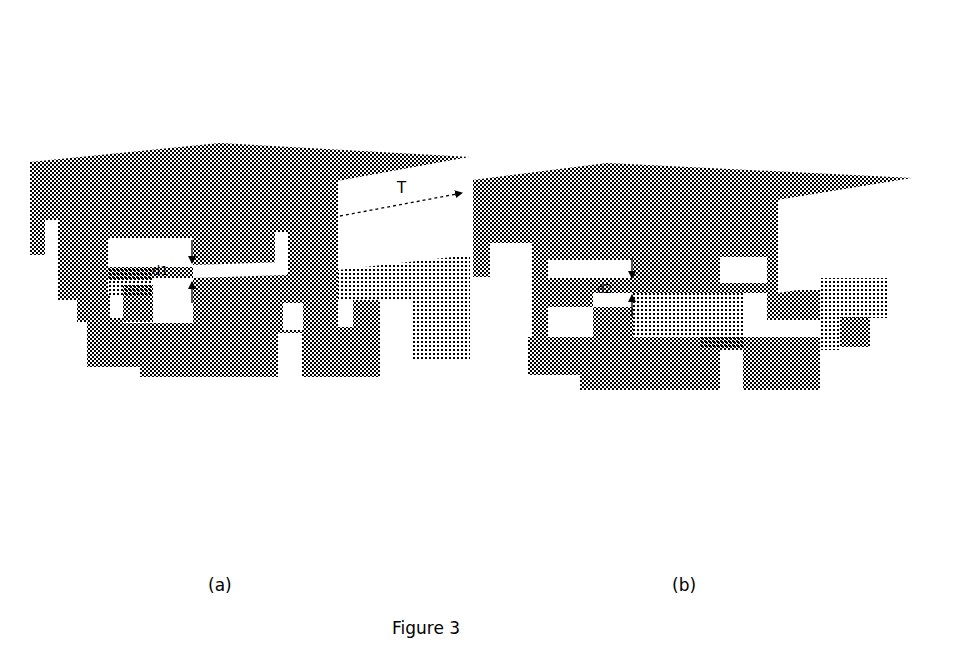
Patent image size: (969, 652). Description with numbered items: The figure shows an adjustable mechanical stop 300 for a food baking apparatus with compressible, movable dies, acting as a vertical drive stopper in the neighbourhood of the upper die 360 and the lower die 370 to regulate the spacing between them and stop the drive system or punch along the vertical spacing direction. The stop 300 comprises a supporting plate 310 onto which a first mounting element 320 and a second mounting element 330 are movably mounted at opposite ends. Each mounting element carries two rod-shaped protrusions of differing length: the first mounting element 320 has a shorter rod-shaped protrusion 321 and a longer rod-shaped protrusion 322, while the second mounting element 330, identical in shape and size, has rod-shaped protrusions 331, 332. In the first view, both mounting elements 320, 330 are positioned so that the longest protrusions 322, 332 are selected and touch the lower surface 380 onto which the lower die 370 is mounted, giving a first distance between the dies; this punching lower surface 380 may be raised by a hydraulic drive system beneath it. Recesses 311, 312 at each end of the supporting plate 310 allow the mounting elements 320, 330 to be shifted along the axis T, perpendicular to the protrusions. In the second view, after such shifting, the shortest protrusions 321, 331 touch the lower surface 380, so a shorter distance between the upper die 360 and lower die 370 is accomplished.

The adjustable mechanical stop 300 is at (347, 137).
The supporting plate 310 is at (430, 237).
The recess 311 is at (53, 160).
The recess 312 is at (293, 215).
The first mounting element 320 is at (58, 275).
The rod-shaped protrusion 321 is at (80, 318).
The rod-shaped protrusion 322 is at (122, 365).
The second mounting element 330 is at (407, 282).
The rod-shaped protrusion 331 is at (307, 377).
The rod-shaped protrusion 332 is at (372, 377).
The upper die 360 is at (222, 265).
The lower die 370 is at (227, 377).
The lower surface 380 is at (170, 363).